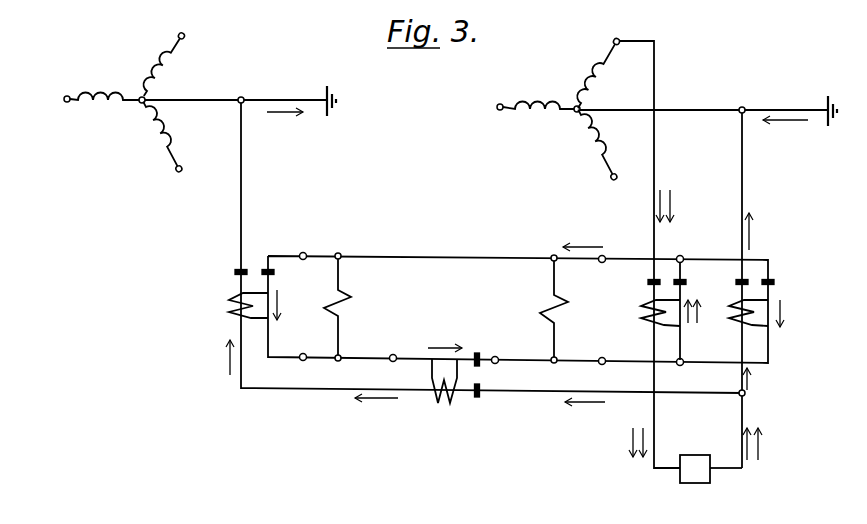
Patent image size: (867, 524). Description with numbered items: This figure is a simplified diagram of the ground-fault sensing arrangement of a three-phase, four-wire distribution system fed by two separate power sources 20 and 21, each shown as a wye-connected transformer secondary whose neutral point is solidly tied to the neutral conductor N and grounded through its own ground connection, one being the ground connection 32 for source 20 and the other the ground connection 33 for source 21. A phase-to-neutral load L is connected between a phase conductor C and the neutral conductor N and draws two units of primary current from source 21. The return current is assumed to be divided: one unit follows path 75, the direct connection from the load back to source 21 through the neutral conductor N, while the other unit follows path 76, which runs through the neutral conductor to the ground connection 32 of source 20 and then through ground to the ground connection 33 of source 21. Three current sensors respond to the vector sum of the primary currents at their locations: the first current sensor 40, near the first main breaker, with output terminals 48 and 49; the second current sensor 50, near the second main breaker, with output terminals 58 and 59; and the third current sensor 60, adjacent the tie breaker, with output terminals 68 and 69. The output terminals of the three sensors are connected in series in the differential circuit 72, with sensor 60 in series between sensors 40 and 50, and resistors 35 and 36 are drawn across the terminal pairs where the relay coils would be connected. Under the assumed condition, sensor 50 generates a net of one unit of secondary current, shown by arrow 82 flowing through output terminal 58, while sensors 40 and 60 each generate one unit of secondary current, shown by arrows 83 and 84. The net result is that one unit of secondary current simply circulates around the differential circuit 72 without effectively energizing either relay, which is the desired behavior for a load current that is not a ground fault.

The power source 20 is at (130, 65).
The power source 21 is at (565, 75).
The ground connection 32 is at (277, 100).
The ground connection 33 is at (777, 110).
The neutral conductor N is at (241, 210).
The phase conductor C is at (654, 152).
The load L is at (711, 469).
The differential circuit 72 is at (443, 257).
The terminal 48 is at (305, 251).
The terminal 49 is at (303, 353).
The terminal 68 is at (392, 354).
The terminal 69 is at (498, 357).
The terminal 58 is at (604, 264).
The terminal 59 is at (602, 358).
The resistor 36 is at (352, 298).
The resistor 35 is at (547, 307).
The current sensor 40 is at (228, 305).
The current sensor 50 is at (726, 348).
The current sensor 60 is at (447, 403).
The return current path 76 is at (280, 116).
The return current path 75 is at (752, 233).
The secondary current arrow 82 is at (586, 245).
The secondary current arrow 83 is at (282, 293).
The secondary current arrow 84 is at (438, 347).